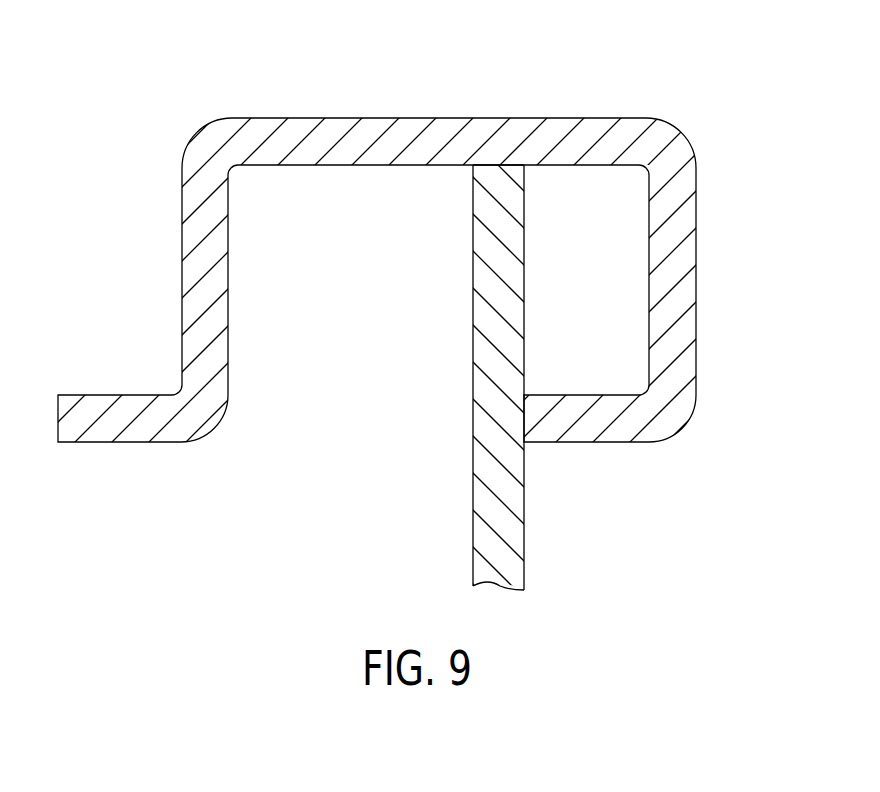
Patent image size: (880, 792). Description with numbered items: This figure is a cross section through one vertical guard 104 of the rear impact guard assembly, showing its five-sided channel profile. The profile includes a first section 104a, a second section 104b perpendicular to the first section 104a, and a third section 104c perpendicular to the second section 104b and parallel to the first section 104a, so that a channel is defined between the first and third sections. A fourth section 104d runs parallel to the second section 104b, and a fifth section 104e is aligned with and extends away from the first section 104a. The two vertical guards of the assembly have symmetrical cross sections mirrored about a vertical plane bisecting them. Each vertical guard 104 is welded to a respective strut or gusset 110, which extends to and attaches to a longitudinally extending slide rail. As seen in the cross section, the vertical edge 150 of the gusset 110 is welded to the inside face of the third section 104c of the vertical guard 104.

The vertical guard 104 is at (135, 105).
The first section 104a is at (585, 430).
The second section 104b is at (680, 303).
The third section 104c is at (487, 130).
The fourth section 104d is at (208, 263).
The fifth section 104e is at (137, 423).
The gusset 110 is at (505, 518).
The vertical edge 150 is at (502, 167).